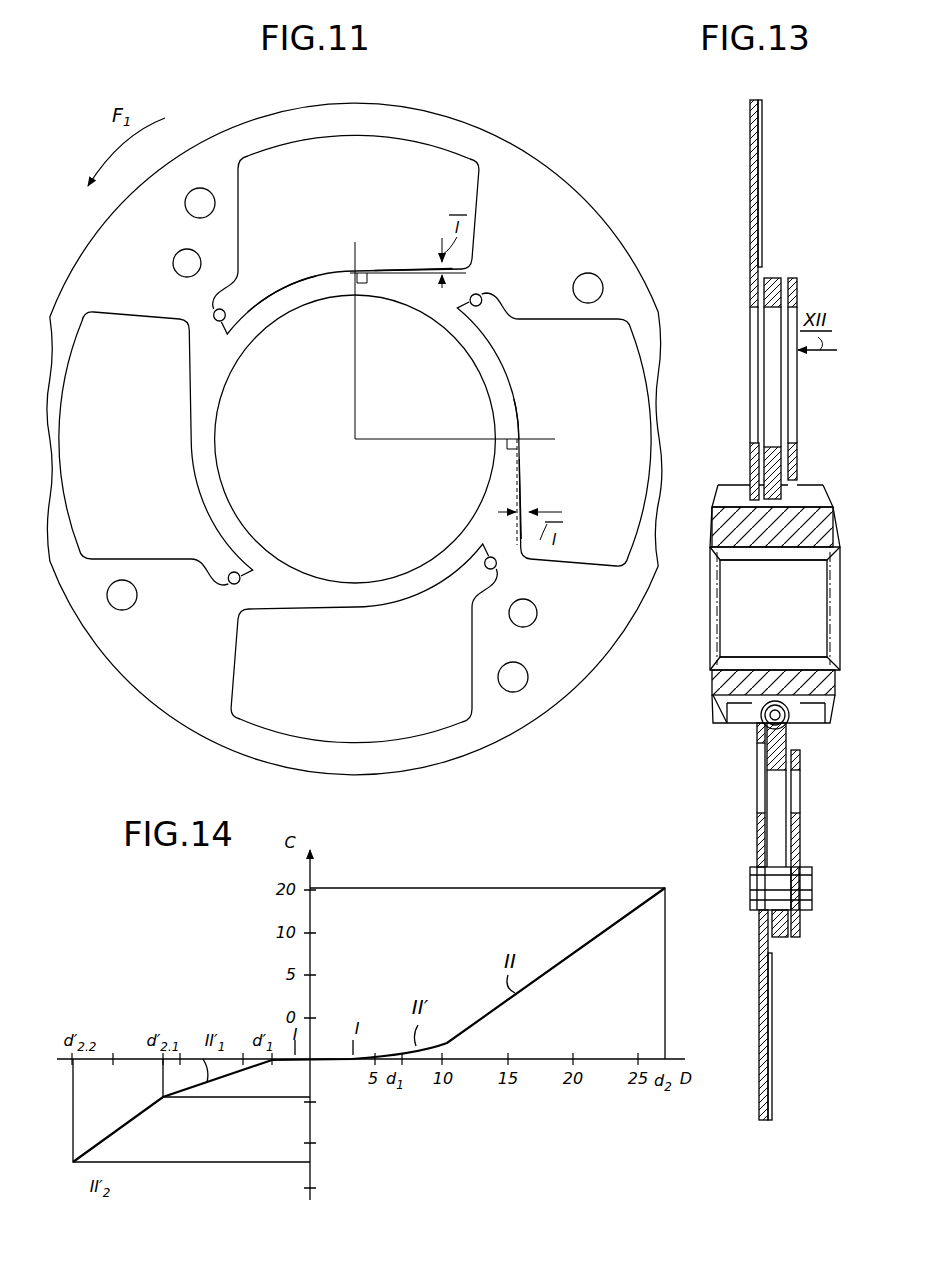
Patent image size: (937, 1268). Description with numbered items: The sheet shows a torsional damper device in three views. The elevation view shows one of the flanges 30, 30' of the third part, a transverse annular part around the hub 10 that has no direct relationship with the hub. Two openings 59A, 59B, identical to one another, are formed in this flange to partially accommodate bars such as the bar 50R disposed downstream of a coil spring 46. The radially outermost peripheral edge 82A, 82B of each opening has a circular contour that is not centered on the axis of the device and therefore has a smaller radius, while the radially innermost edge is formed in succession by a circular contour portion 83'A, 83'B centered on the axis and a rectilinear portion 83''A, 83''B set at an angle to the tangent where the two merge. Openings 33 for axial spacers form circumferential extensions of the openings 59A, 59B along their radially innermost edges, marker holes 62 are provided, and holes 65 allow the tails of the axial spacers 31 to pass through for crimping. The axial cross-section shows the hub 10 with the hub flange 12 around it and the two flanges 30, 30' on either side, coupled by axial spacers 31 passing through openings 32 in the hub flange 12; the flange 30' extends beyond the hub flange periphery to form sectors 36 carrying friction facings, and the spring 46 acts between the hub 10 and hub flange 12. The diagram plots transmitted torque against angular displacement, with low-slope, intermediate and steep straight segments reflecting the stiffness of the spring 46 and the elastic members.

In FIG. 11, the flange 30 is at (354, 439).
In FIG. 13, the flange 30 is at (807, 577).
In FIG. 13, the flange 30' is at (734, 375).
In FIG. 11, the openings 33 is at (220, 326).
In FIG. 11, the opening 59A is at (86, 341).
In FIG. 11, the opening 59B is at (433, 154).
In FIG. 11, the marker holes 62 is at (175, 264).
In FIG. 11, the holes 65 is at (188, 205).
In FIG. 11, the radially outermost peripheral edge 82A is at (650, 414).
In FIG. 11, the radially outermost peripheral edge 82B is at (332, 142).
In FIG. 11, the circular contour portion 83'A is at (475, 408).
In FIG. 11, the rectilinear portion 83''A is at (487, 498).
In FIG. 11, the circular contour portion 83'B is at (283, 313).
In FIG. 11, the rectilinear portion 83''B is at (414, 300).
In FIG. 13, the sectors 36 is at (750, 128).
In FIG. 13, the hub flange 12 is at (774, 276).
In FIG. 13, the hub 10 is at (822, 482).
In FIG. 13, the coil spring 46 is at (776, 700).
In FIG. 13, the bar 50R is at (731, 716).
In FIG. 13, the axial spacers 31 is at (777, 878).
In FIG. 13, the openings 32 is at (778, 918).